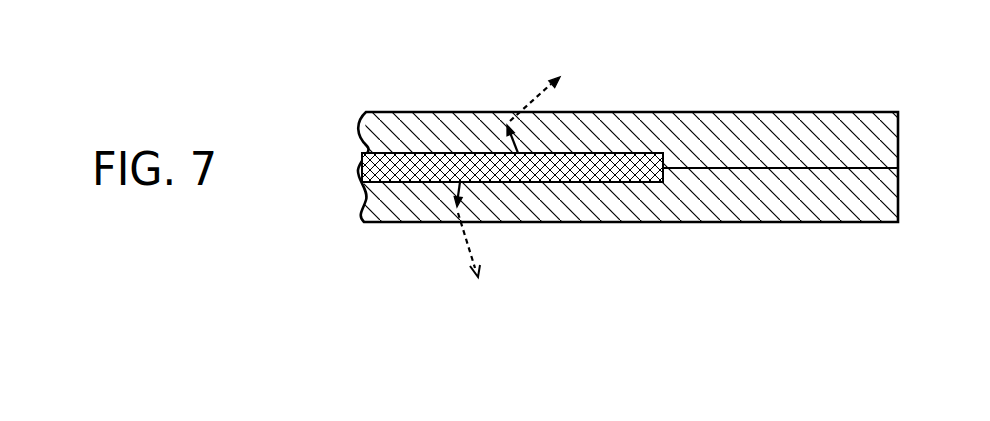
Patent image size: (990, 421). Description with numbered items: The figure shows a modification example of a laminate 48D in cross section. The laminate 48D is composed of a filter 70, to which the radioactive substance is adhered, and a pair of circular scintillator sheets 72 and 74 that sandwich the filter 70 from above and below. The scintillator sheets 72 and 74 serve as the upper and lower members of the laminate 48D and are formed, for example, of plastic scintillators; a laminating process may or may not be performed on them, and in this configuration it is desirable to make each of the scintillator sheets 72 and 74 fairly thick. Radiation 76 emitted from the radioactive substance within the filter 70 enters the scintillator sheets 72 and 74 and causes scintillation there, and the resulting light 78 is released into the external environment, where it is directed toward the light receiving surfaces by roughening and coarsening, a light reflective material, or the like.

The laminate 48D is at (873, 75).
The filter 70 is at (361, 170).
The scintillator sheet 72 is at (695, 112).
The scintillator sheet 74 is at (693, 223).
The radiation 76 is at (524, 139).
The light 78 is at (535, 98).